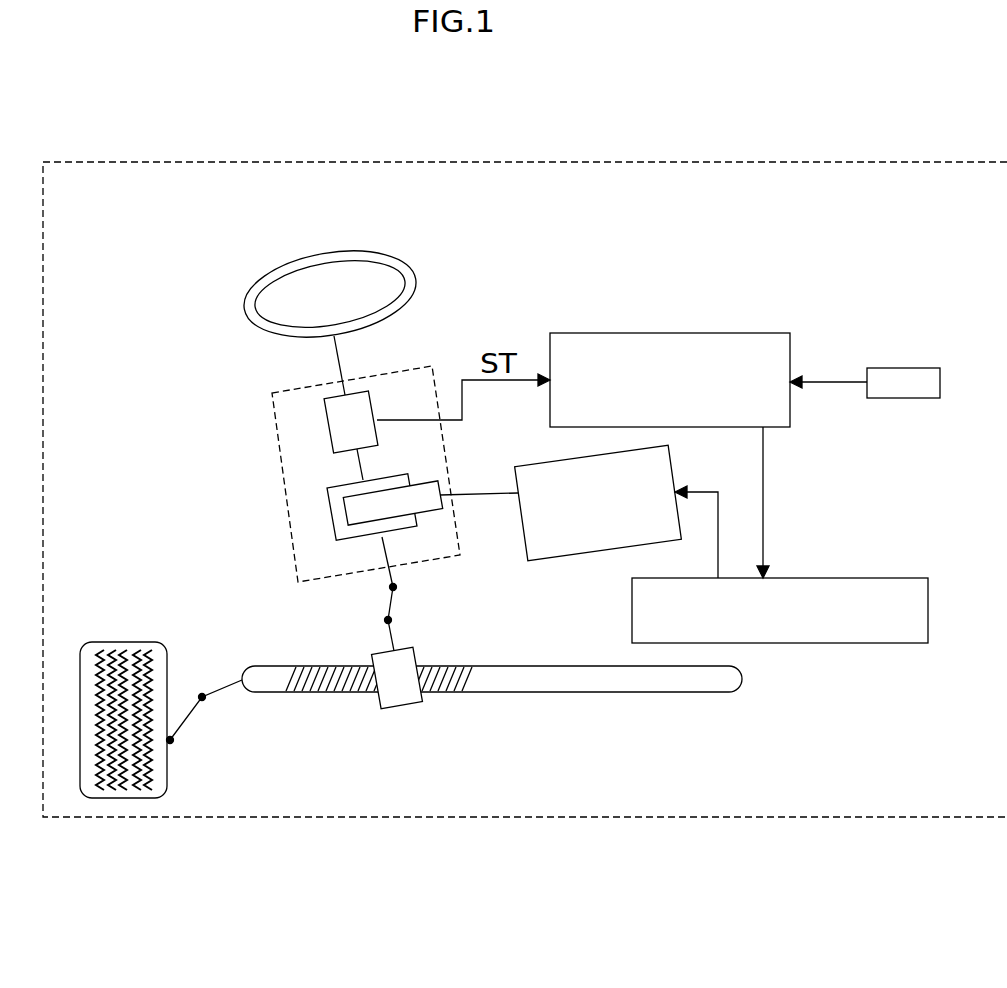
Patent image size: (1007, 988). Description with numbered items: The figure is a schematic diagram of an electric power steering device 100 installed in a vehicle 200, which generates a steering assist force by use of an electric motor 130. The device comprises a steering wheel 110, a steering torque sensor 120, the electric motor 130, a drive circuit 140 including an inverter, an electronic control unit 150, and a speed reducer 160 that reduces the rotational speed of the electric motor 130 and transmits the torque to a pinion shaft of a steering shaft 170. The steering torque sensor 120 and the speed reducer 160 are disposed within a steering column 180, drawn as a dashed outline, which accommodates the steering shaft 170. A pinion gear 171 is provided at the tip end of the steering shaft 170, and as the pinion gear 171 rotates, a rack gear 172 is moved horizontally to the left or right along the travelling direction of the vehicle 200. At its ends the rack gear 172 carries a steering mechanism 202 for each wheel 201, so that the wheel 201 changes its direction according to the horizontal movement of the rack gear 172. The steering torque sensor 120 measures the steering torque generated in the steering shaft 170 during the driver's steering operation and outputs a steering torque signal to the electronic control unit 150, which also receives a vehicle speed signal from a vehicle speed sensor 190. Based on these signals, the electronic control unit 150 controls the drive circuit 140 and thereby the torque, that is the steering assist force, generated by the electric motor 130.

The electric power steering device 100 is at (480, 262).
The steering wheel 110 is at (322, 257).
The steering torque sensor 120 is at (326, 425).
The electric motor 130 is at (513, 464).
The drive circuit 140 is at (925, 643).
The electronic control unit 150 is at (652, 333).
The speed reducer 160 is at (330, 510).
The steering shaft 170 is at (358, 468).
The pinion gear 171 is at (402, 708).
The rack gear 172 is at (583, 665).
The steering column 180 is at (432, 378).
The vehicle speed sensor 190 is at (925, 368).
The vehicle 200 is at (722, 162).
The wheel 201 is at (125, 641).
The steering mechanism 202 is at (206, 714).